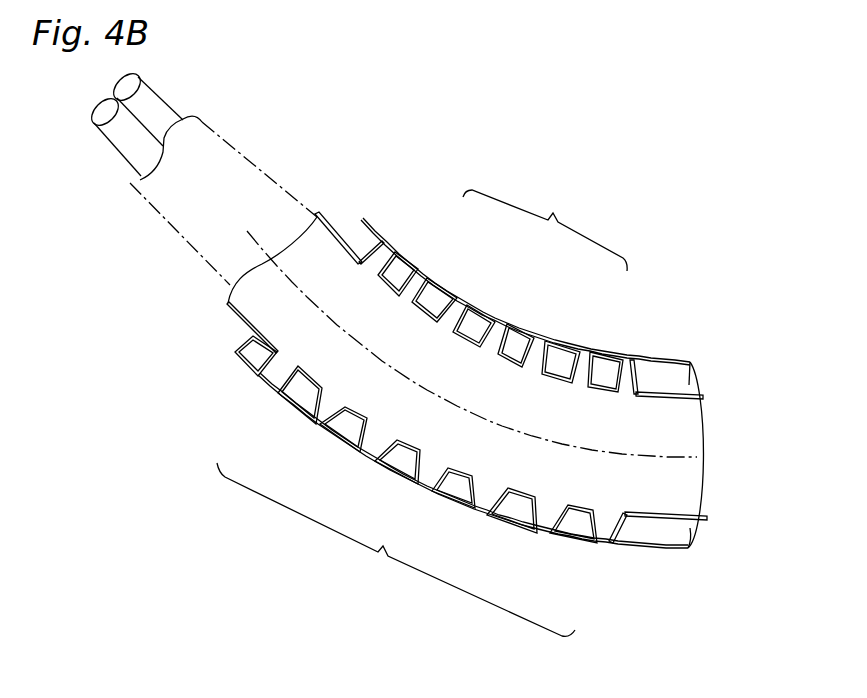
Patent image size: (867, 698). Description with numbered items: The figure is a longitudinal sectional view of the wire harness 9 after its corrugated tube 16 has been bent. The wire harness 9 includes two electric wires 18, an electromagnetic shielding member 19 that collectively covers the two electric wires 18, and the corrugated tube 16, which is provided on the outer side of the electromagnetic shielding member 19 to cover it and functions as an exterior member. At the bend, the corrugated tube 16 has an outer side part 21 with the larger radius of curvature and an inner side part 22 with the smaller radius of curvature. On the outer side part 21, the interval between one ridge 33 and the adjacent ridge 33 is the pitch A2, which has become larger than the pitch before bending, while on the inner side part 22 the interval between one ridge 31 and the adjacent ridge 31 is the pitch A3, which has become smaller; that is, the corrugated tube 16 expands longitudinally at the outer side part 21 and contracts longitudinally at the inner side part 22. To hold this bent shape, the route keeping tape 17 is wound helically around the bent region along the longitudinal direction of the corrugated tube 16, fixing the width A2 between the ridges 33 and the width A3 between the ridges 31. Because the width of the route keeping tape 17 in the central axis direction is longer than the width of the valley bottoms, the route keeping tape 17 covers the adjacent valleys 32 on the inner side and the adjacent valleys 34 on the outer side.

The wire harness 9 is at (695, 315).
The corrugated tube 16 is at (233, 312).
The route keeping tape 17 is at (350, 230).
The electric wire 18 is at (163, 100).
The electromagnetic shielding member 19 is at (237, 150).
The outer side part 21 is at (396, 549).
The inner side part 22 is at (545, 228).
The ridge 31 is at (452, 318).
The valley 32 is at (462, 343).
The ridge 33 is at (376, 440).
The valley 34 is at (405, 444).
The pitch A2 is at (318, 452).
The pitch A3 is at (458, 285).